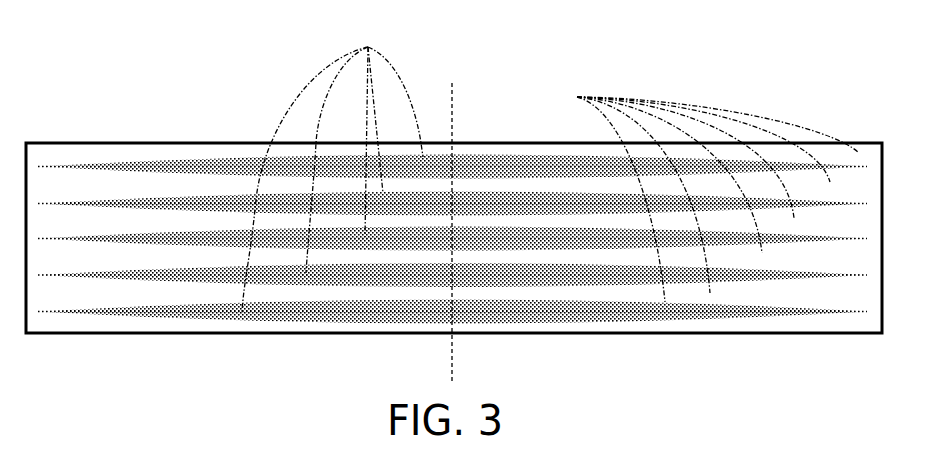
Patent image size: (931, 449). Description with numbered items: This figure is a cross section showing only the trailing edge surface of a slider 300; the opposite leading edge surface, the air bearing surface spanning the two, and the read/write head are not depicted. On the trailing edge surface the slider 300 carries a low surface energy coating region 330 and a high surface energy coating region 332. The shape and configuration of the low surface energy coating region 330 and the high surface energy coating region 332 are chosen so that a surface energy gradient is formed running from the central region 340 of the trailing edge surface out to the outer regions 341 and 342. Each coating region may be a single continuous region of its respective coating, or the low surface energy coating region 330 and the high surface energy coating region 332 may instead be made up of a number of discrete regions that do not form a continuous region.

The slider 300 is at (141, 112).
The low surface energy coating region 330 is at (332, 160).
The central region 340 is at (453, 130).
The high surface energy coating region 332 is at (688, 199).
The outer region 341 is at (101, 358).
The outer region 342 is at (820, 358).